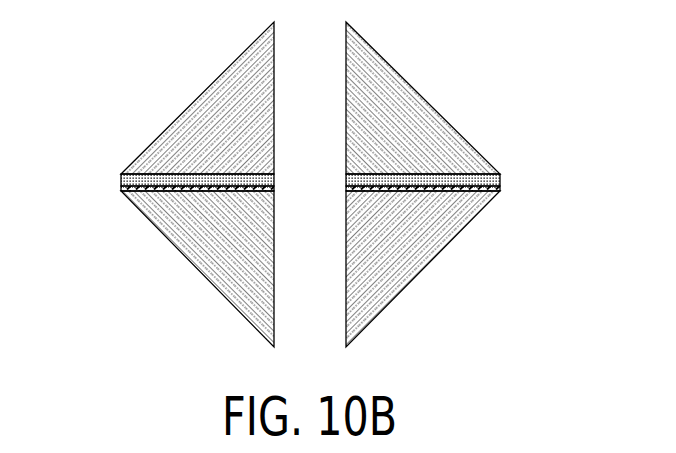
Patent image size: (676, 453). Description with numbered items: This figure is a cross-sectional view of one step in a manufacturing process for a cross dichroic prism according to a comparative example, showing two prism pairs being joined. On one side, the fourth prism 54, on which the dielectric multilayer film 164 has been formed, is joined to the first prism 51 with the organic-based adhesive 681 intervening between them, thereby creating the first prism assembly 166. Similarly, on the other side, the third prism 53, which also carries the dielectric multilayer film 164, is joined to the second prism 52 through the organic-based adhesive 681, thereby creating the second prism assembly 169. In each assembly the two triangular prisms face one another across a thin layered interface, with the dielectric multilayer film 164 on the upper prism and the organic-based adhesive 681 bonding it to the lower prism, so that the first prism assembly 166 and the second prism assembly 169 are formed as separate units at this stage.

The second prism assembly 169 is at (197, 182).
The first prism assembly 166 is at (423, 182).
The third prism 53 is at (211, 98).
The second prism 52 is at (184, 249).
The fourth prism 54 is at (417, 98).
The first prism 51 is at (441, 247).
The dielectric multilayer film 164 is at (121, 180).
The organic-based adhesive 681 is at (121, 189).